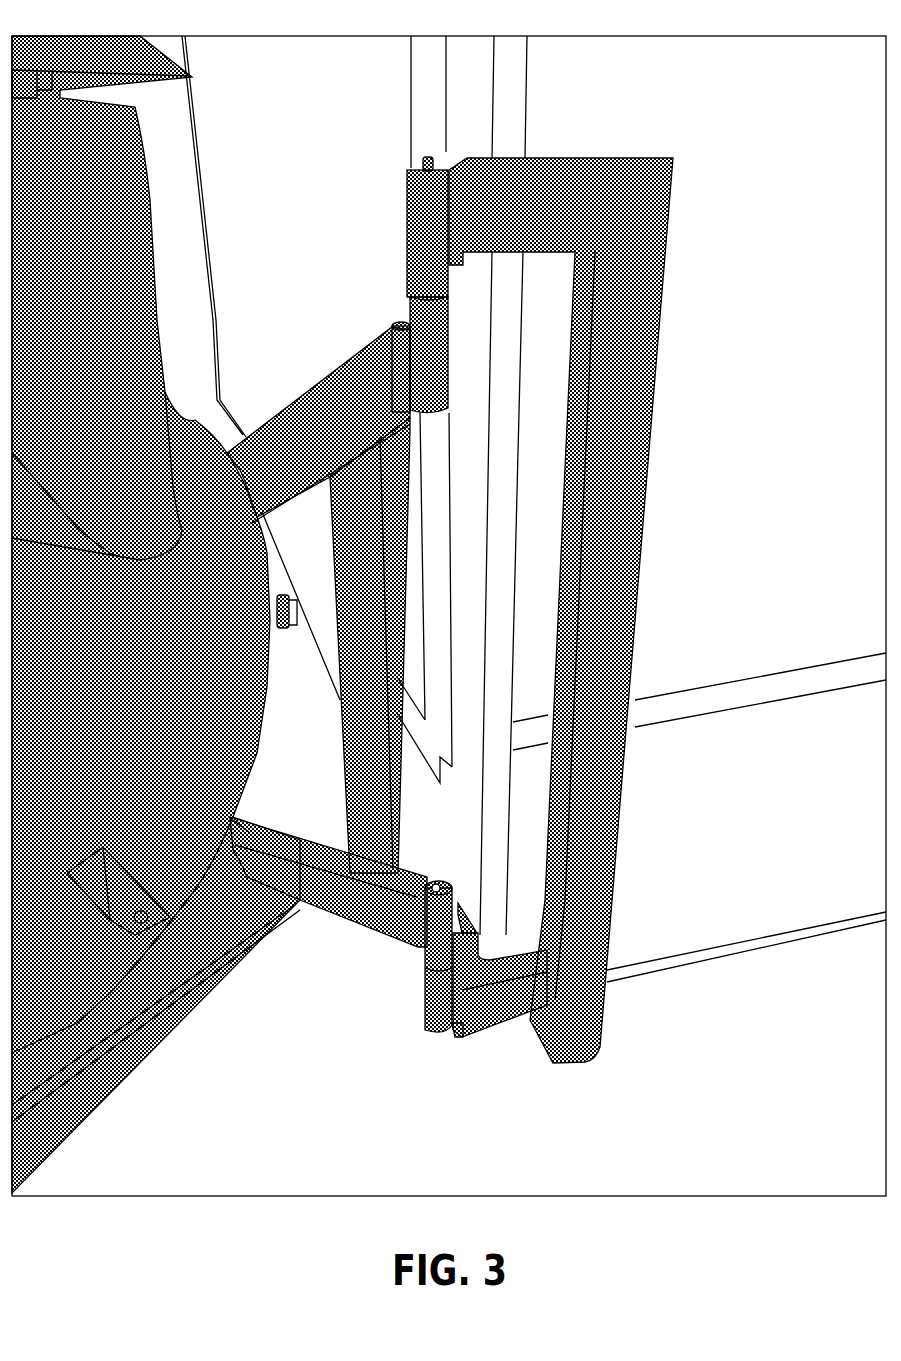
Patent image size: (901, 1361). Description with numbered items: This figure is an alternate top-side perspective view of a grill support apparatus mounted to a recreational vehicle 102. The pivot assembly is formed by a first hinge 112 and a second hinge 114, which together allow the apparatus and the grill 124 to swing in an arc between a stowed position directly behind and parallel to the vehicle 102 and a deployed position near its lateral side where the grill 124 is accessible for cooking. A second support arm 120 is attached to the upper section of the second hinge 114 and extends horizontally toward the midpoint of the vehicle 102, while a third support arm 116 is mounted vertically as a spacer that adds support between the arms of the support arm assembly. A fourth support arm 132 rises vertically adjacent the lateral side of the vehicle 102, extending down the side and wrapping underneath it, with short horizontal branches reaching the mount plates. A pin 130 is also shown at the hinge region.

The vehicle 102 is at (782, 265).
The first hinge 112 is at (407, 260).
The second hinge 114 is at (423, 1003).
The third support arm 116 is at (338, 733).
The second support arm 120 is at (260, 827).
The grill 124 is at (147, 218).
The hinge pin 130 is at (440, 883).
The fourth support arm 132 is at (578, 158).